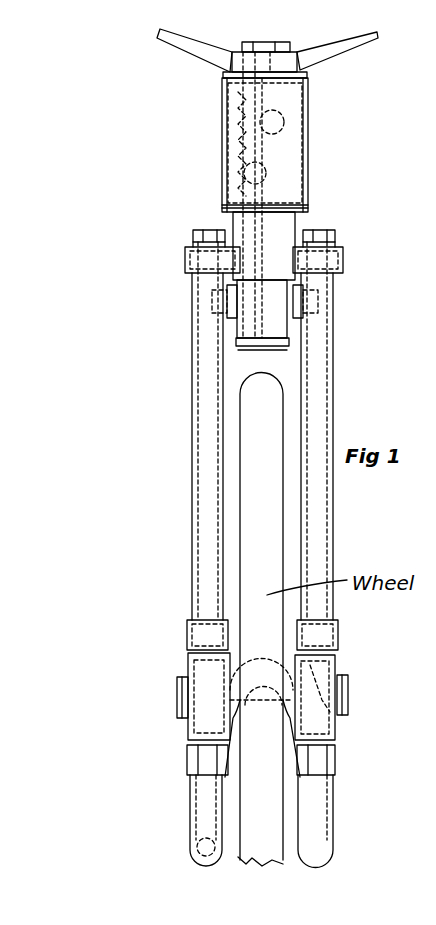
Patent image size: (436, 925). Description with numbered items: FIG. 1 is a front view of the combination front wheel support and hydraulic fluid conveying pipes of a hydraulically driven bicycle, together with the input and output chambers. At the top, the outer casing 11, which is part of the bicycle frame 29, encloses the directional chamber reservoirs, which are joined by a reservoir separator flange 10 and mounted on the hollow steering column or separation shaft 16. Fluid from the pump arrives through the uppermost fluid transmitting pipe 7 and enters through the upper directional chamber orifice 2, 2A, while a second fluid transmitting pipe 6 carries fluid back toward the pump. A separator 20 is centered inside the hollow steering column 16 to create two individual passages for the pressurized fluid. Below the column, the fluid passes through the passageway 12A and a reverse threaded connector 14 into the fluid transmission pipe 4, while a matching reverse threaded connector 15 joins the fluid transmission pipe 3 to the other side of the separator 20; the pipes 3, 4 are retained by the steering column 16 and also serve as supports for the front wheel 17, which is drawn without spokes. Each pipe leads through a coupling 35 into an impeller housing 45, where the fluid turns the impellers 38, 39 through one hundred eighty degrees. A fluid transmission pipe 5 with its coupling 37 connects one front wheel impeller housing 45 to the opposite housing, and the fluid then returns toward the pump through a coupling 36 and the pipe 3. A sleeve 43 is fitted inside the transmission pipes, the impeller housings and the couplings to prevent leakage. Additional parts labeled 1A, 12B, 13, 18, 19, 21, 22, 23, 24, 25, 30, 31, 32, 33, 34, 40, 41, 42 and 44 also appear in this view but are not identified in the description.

The upper directional chamber orifice 2 is at (431, 100).
The fluid transmission pipe 3 is at (192, 405).
The fluid transmission pipe 4 is at (335, 385).
The fluid transmission pipe 5 is at (330, 857).
The fluid transmitting pipe 6 is at (254, 172).
The fluid transmitting pipe 7 is at (274, 125).
The reservoir separator flange 10 is at (228, 147).
The outer casing 11 is at (221, 88).
The passageway 12A is at (190, 251).
The yoke collar bore 12B is at (187, 268).
The right yoke collar 13 is at (343, 252).
The reverse threaded connector 14 is at (300, 320).
The reverse threaded connector 15 is at (230, 320).
The steering column 16 is at (289, 60).
The wheel 17 is at (283, 415).
The left leg cap 18 is at (197, 230).
The right leg cap 19 is at (330, 232).
The separator 20 is at (245, 52).
The lock nut 21 is at (250, 44).
The right handle arm 22 is at (300, 66).
The washer 23 is at (294, 75).
The left handle arm 24 is at (230, 72).
The bottom plate 25 is at (297, 207).
The frame 29 is at (305, 97).
The spring 30 is at (238, 103).
The bearing plate 31 is at (248, 348).
The spindle end cap 32 is at (237, 340).
The left upper axle collar 33 is at (198, 613).
The collar bore 34 is at (185, 632).
The coupling 35 is at (338, 633).
The coupling 36 is at (195, 785).
The coupling 37 is at (335, 760).
The impeller 38 is at (200, 663).
The impeller 39 is at (330, 662).
The right axle bolt 40 is at (350, 697).
The axle bolt head 41 is at (348, 715).
The left axle bolt 42 is at (172, 685).
The sleeve 43 is at (190, 787).
The left lower axle collar 44 is at (180, 758).
The impeller housing 45 is at (228, 663).
The left set screw 1A is at (230, 222).
The upper directional chamber orifice 2A is at (304, 118).